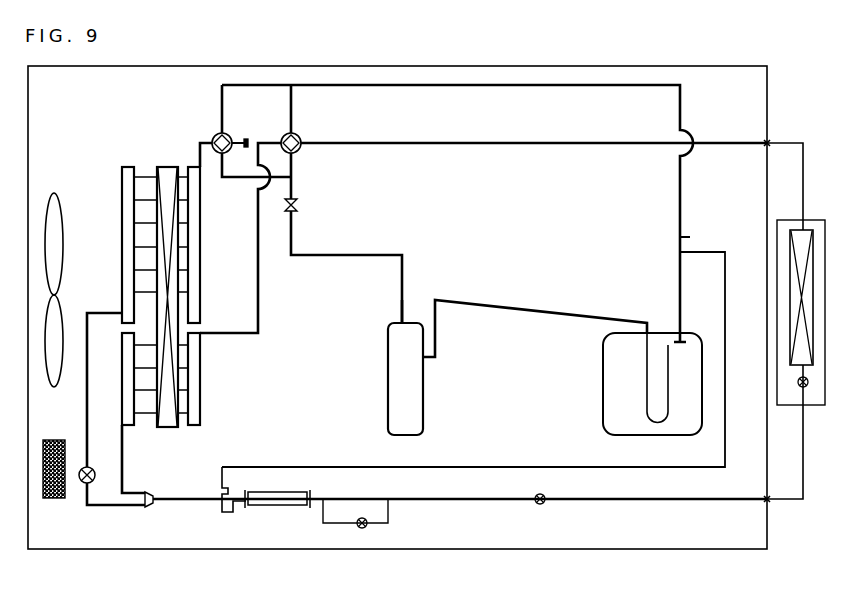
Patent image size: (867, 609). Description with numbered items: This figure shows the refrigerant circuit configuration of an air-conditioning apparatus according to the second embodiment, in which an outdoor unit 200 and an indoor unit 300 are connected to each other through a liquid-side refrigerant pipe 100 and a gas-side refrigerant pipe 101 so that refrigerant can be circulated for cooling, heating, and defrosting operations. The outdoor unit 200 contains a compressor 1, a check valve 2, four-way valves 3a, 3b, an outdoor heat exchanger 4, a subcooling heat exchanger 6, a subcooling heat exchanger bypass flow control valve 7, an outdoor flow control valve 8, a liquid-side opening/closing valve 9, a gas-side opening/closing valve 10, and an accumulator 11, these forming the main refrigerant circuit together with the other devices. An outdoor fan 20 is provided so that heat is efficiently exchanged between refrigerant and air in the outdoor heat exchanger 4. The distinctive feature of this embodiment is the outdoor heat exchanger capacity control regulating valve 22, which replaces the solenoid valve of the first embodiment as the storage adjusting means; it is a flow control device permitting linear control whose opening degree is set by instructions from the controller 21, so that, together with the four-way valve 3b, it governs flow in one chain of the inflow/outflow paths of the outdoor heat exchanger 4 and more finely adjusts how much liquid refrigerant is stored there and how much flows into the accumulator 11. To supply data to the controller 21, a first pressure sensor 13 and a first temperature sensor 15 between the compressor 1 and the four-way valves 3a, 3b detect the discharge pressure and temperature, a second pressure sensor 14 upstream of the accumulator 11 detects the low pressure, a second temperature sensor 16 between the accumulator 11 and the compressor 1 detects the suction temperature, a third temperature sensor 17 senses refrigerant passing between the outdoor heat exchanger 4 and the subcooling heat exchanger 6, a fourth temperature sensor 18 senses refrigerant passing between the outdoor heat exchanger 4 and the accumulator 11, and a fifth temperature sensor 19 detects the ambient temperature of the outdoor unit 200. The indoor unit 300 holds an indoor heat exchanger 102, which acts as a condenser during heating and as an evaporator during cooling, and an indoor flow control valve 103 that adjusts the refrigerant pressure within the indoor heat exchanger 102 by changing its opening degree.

The compressor 1 is at (423, 407).
The check valve 2 is at (297, 206).
The four-way valve 3a is at (232, 137).
The four-way valve 3b is at (301, 137).
The outdoor heat exchanger 4 is at (120, 167).
The subcooling heat exchanger 6 is at (285, 491).
The subcooling heat exchanger bypass flow control valve 7 is at (355, 527).
The outdoor flow control valve 8 is at (537, 504).
The liquid-side opening/closing valve 9 is at (762, 500).
The gas-side opening/closing valve 10 is at (762, 150).
The accumulator 11 is at (603, 372).
The first pressure sensor 13 is at (298, 241).
The second pressure sensor 14 is at (690, 237).
The first temperature sensor 15 is at (378, 318).
The second temperature sensor 16 is at (447, 330).
The third temperature sensor 17 is at (184, 496).
The fourth temperature sensor 18 is at (617, 96).
The fifth temperature sensor 19 is at (125, 108).
The outdoor fan 20 is at (58, 193).
The controller 21 is at (52, 434).
The outdoor heat exchanger capacity control regulating valve 22 is at (95, 485).
The liquid-side refrigerant pipe 100 is at (775, 500).
The gas-side refrigerant pipe 101 is at (782, 142).
The indoor heat exchanger 102 is at (792, 228).
The indoor flow control valve 103 is at (800, 390).
The outdoor unit 200 is at (683, 553).
The indoor unit 300 is at (808, 408).